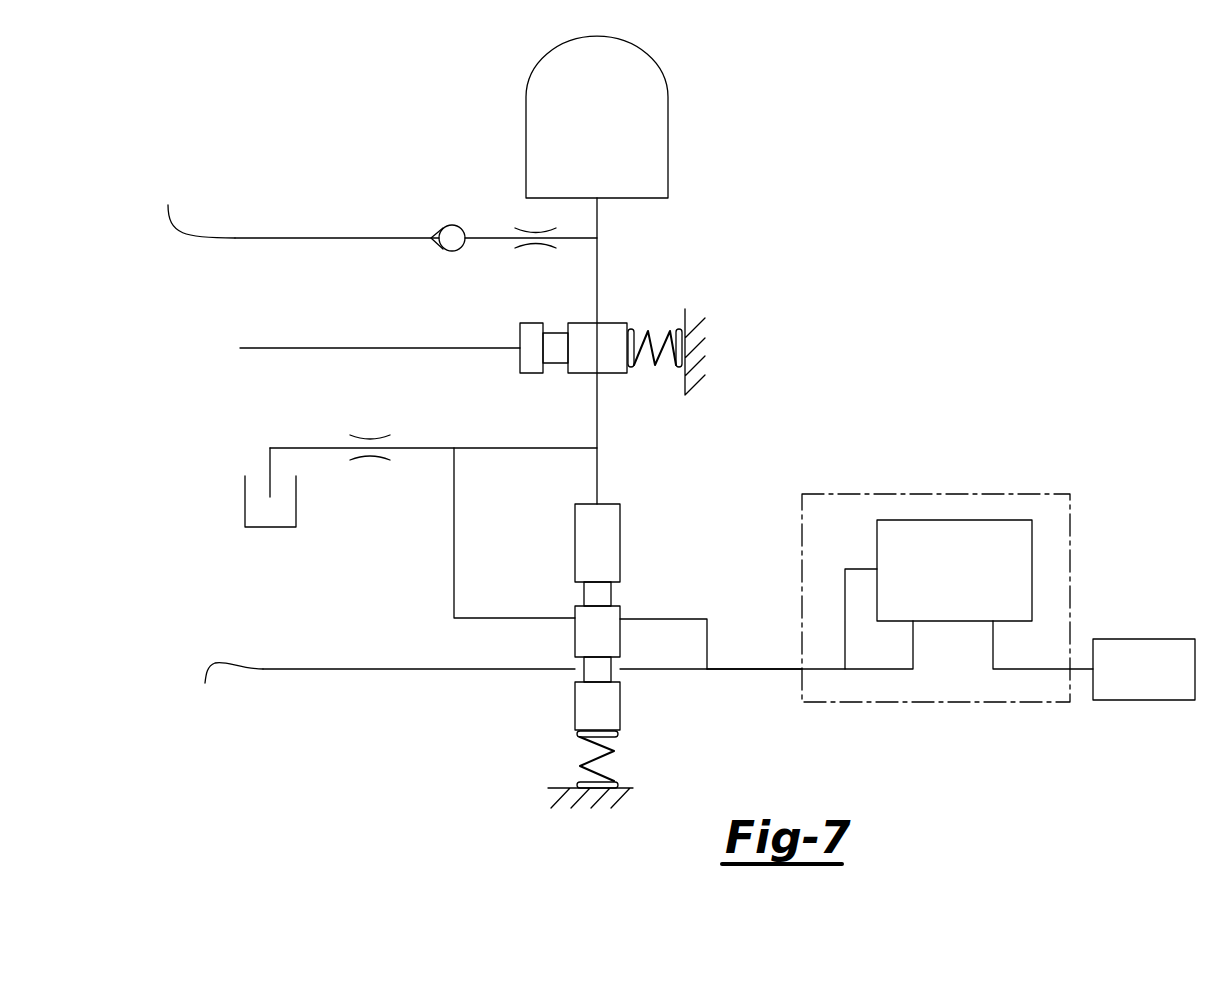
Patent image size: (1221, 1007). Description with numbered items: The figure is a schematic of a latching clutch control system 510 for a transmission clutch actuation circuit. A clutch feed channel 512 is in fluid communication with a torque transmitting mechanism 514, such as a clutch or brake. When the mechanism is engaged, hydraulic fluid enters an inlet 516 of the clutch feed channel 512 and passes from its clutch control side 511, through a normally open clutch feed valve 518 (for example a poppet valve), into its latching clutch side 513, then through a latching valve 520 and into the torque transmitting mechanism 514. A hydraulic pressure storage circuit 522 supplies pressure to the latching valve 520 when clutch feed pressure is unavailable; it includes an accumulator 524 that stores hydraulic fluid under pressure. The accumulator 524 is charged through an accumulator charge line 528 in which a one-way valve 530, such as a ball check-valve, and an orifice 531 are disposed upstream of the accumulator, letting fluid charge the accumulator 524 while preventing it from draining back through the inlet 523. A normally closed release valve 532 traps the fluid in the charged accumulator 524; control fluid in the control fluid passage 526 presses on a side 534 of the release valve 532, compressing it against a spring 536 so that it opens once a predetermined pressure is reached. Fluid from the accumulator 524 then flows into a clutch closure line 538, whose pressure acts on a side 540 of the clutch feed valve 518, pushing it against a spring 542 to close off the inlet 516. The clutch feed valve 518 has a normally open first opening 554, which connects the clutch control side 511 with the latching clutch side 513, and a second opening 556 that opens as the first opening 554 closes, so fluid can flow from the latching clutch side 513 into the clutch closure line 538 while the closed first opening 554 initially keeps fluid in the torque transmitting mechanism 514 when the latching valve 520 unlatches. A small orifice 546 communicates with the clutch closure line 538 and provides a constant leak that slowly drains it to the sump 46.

The latching clutch control system 510 is at (918, 207).
The hydraulic pressure storage circuit 522 is at (726, 207).
The accumulator 524 is at (668, 83).
The inlet 523 is at (194, 208).
The accumulator charge line 528 is at (295, 238).
The one-way valve 530 is at (452, 218).
The orifice 531 is at (536, 249).
The control fluid passage 526 is at (305, 348).
The release valve 532 is at (614, 323).
The side of release valve 534 is at (520, 358).
The spring 536 is at (662, 370).
The clutch closure line 538 is at (597, 423).
The side of clutch feed valve 540 is at (590, 504).
The clutch feed valve 518 is at (630, 524).
The second opening 556 is at (611, 594).
The first opening 554 is at (584, 674).
The spring 542 is at (618, 780).
The orifice 546 is at (370, 472).
The sump 46 is at (245, 503).
The latching valve 520 is at (1008, 533).
The torque transmitting mechanism 514 is at (1170, 687).
The latching clutch side 513 is at (749, 668).
The clutch feed channel 512 is at (329, 681).
The inlet 516 is at (225, 689).
The clutch control side 511 is at (437, 669).